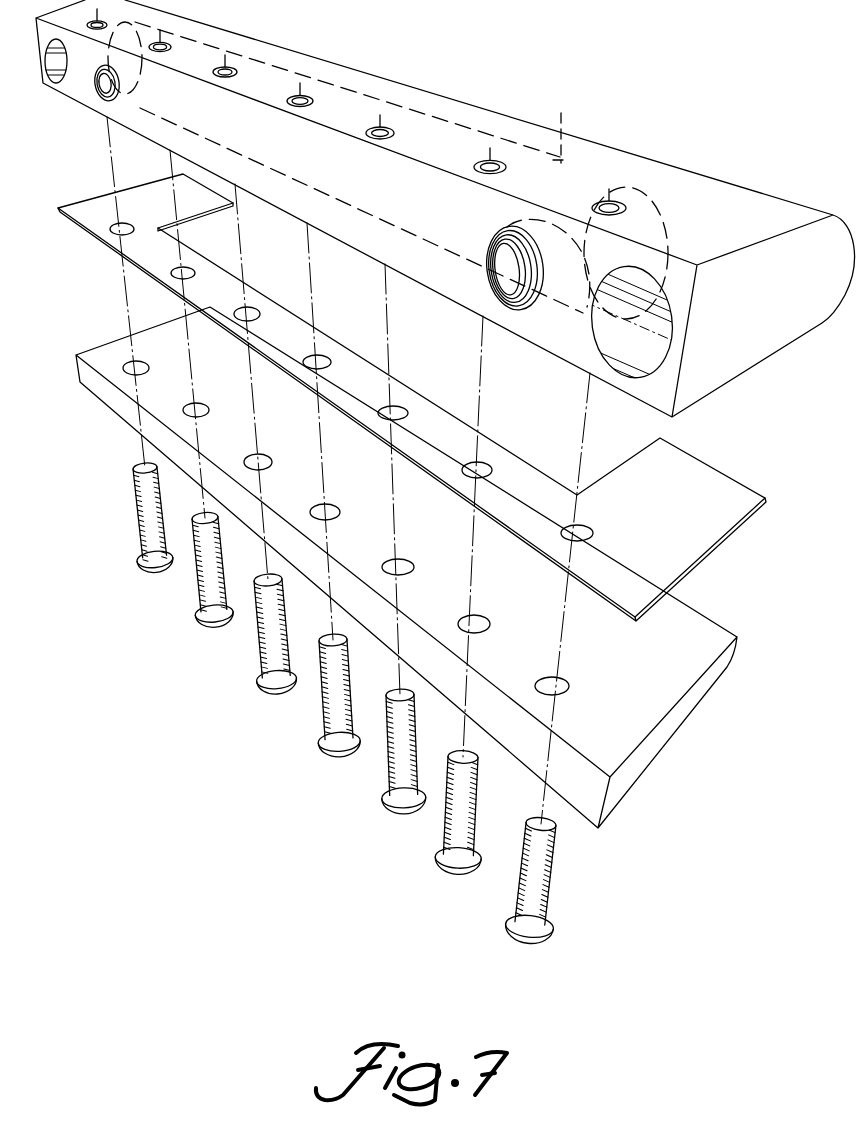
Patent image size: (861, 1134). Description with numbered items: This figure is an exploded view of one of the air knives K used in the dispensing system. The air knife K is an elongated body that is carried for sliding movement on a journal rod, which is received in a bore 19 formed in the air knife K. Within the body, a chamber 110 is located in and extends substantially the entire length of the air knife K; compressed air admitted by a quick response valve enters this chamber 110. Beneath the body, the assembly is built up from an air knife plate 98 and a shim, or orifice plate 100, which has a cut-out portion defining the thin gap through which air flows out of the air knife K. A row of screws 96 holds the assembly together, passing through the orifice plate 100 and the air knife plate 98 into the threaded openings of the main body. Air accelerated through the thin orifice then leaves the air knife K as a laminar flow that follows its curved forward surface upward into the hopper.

The air knife K is at (445, 208).
The chamber 110 is at (567, 112).
The bore 19 is at (665, 312).
The orifice plate 100 is at (712, 523).
The air knife plate 98 is at (672, 724).
The screws 96 is at (555, 856).